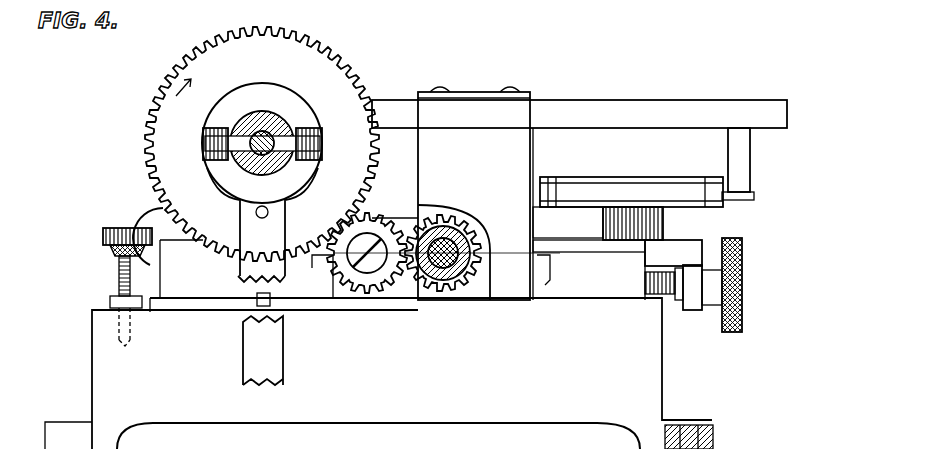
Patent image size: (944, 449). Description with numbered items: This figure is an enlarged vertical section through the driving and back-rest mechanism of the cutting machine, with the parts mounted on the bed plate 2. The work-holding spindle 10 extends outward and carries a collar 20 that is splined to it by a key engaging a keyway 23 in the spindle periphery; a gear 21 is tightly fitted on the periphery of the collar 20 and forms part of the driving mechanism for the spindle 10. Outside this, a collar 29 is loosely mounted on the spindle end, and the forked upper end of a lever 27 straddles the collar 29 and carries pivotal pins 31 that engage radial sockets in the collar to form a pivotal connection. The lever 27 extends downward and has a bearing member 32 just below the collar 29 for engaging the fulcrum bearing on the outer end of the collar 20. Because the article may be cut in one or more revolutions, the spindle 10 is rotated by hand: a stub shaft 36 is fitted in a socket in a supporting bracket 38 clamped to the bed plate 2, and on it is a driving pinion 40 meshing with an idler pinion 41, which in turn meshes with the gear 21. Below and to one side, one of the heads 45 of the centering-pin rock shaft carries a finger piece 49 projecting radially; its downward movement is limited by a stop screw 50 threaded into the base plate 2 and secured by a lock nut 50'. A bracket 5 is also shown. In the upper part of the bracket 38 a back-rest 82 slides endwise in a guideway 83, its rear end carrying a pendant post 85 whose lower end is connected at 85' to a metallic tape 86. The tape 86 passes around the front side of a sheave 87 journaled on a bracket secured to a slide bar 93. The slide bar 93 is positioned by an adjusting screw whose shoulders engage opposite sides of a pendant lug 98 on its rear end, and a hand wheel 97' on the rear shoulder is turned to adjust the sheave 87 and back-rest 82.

The bed plate 2 is at (379, 288).
The bracket 5 is at (427, 277).
The work-holding spindle 10 is at (262, 178).
The collar 20 is at (297, 112).
The gear 21 is at (262, 144).
The keyway 23 is at (266, 131).
The lever 27 is at (243, 322).
The collar 29 is at (290, 137).
The pivotal pins 31 is at (205, 146).
The bearing member 32 is at (256, 213).
The stub shaft 36 is at (451, 272).
The supporting bracket 38 is at (474, 196).
The driving pinion 40 is at (440, 278).
The idler pinion 41 is at (368, 272).
The heads 45 is at (145, 230).
The finger piece 49 is at (127, 226).
The stop screw 50 is at (114, 270).
The lock nut 50' is at (109, 314).
The back-rest 82 is at (643, 108).
The guideway 83 is at (472, 96).
The pendant post 85 is at (754, 160).
The connection 85' is at (743, 211).
The metallic tape 86 is at (716, 190).
The sheave 87 is at (640, 181).
The slide bar 93 is at (690, 246).
The hand wheel 97' is at (734, 298).
The pendant lug 98 is at (693, 312).